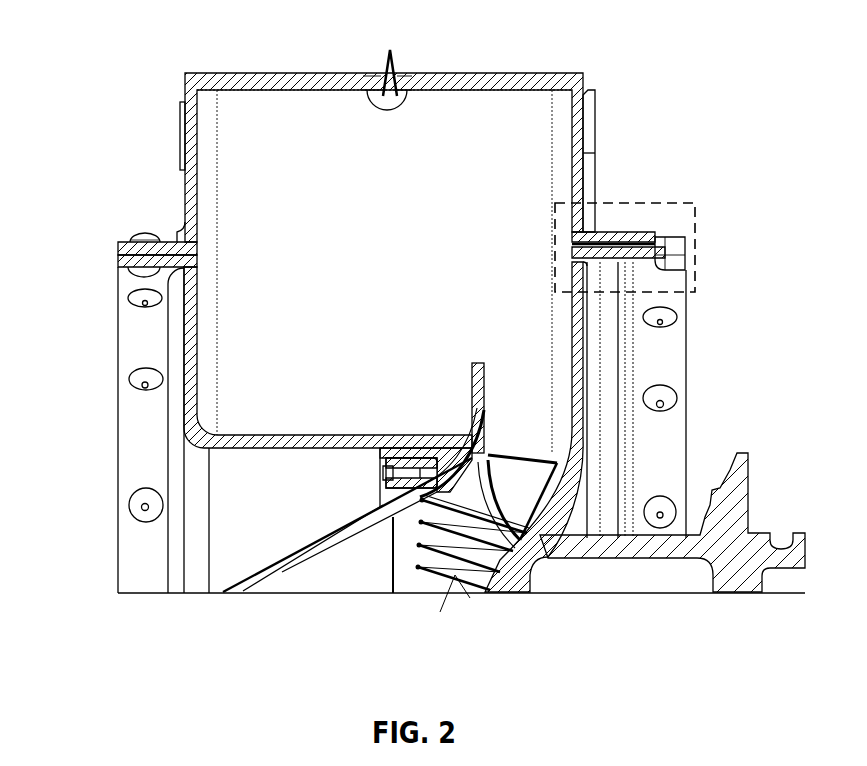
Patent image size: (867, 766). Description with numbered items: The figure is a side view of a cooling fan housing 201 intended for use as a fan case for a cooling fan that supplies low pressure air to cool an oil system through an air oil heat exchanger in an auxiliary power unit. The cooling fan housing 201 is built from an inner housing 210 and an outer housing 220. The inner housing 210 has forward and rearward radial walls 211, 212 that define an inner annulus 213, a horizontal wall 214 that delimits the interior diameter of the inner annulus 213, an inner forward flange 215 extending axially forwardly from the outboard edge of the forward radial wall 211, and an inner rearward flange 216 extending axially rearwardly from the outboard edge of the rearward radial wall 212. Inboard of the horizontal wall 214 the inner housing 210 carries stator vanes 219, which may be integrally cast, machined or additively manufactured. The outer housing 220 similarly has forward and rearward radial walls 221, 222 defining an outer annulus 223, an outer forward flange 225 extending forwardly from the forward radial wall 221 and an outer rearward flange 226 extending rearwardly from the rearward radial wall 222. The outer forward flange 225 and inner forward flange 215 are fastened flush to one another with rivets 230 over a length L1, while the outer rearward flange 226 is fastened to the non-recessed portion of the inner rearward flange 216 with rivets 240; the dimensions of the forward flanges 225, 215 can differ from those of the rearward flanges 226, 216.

The cooling fan housing 201 is at (146, 44).
The inner housing 210 is at (207, 410).
The forward radial wall 211 is at (192, 336).
The rearward radial wall 212 is at (577, 402).
The inner annulus 213 is at (337, 399).
The horizontal wall 214 is at (303, 442).
The inner forward flange 215 is at (118, 260).
The inner rearward flange 216 is at (655, 256).
The stator vanes 219 is at (462, 574).
The outer housing 220 is at (206, 86).
The forward radial wall 221 is at (191, 158).
The rearward radial wall 222 is at (578, 131).
The outer annulus 223 is at (337, 157).
The outer forward flange 225 is at (118, 246).
The outer rearward flange 226 is at (652, 238).
The rivets 230 is at (130, 511).
The rivets 240 is at (655, 522).
The length of the attachment of the outer and inner forward flanges L1 is at (187, 214).